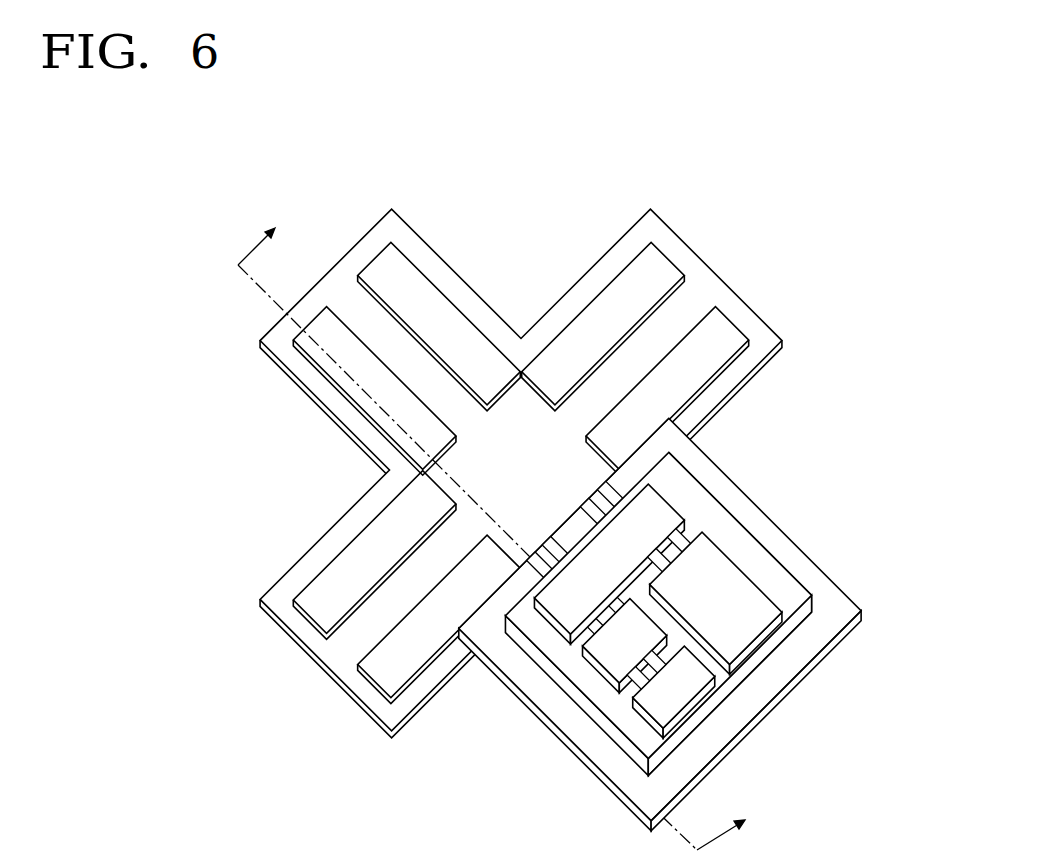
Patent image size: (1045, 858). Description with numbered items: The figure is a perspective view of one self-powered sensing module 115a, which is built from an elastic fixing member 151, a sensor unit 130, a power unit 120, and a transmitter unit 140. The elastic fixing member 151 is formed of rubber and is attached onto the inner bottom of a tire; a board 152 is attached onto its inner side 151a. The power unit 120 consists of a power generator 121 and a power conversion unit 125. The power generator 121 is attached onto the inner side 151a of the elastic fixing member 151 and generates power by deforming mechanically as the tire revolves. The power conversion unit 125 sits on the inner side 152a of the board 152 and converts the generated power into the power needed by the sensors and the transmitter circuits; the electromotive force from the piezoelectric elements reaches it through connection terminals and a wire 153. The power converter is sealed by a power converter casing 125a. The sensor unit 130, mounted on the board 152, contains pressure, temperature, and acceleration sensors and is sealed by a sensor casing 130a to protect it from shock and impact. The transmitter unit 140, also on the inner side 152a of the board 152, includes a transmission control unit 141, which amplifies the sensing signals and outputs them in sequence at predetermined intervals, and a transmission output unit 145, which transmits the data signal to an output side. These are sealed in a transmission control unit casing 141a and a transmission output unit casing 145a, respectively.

The powered sensing module 115a is at (528, 152).
The power unit 120 is at (338, 760).
The power generator 121 is at (296, 614).
The power conversion unit 125 is at (505, 616).
The power converter casing 125a is at (690, 477).
The sensor unit 130 is at (750, 566).
The sensor casing 130a is at (712, 553).
The transmitter unit 140 is at (606, 665).
The transmission control unit 141 is at (543, 620).
The transmission control unit casing 141a is at (597, 663).
The transmission output unit 145 is at (640, 712).
The transmission output unit casing 145a is at (686, 697).
The elastic fixing member 151 is at (855, 633).
The inner side of the elastic fixing member 151a is at (795, 668).
The board 152 is at (848, 622).
The inner side of the board 152a is at (824, 586).
The wire 153 is at (669, 419).